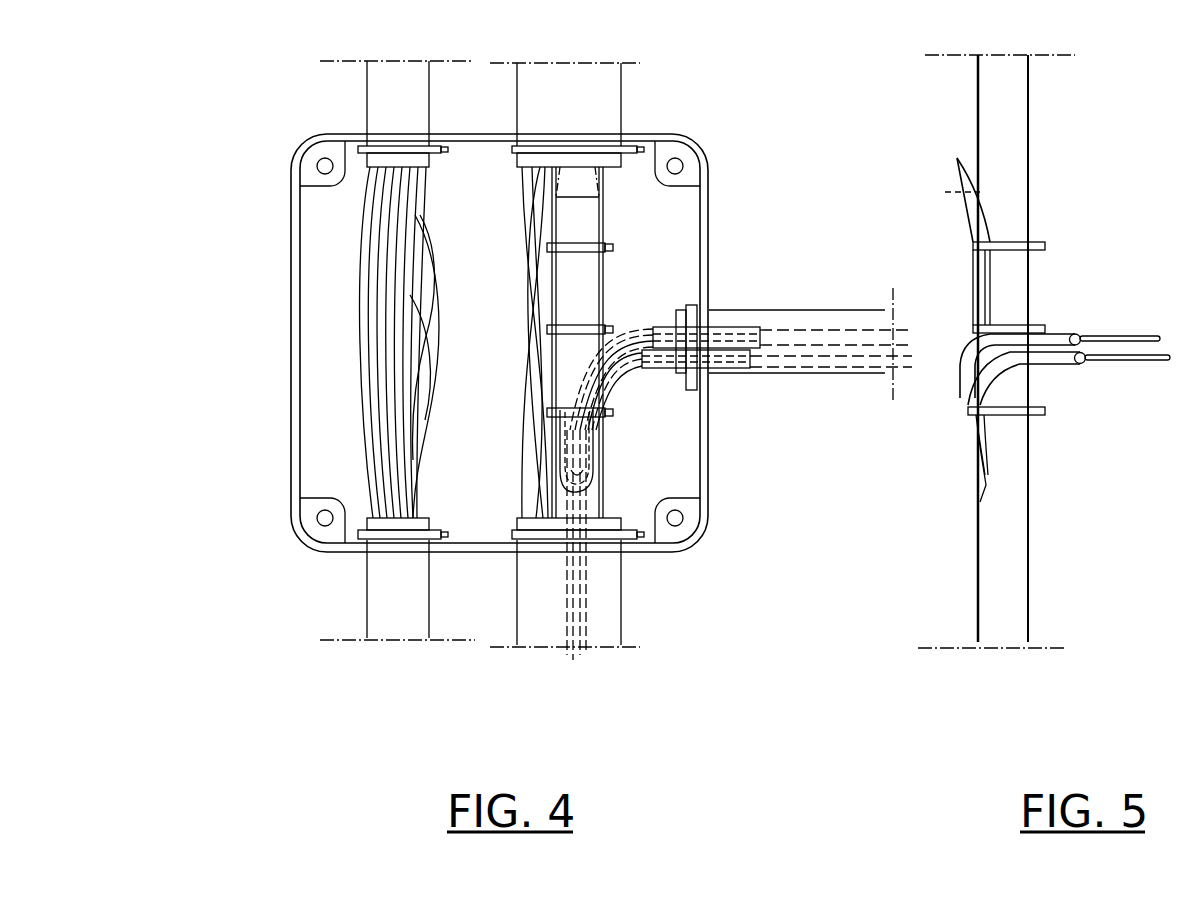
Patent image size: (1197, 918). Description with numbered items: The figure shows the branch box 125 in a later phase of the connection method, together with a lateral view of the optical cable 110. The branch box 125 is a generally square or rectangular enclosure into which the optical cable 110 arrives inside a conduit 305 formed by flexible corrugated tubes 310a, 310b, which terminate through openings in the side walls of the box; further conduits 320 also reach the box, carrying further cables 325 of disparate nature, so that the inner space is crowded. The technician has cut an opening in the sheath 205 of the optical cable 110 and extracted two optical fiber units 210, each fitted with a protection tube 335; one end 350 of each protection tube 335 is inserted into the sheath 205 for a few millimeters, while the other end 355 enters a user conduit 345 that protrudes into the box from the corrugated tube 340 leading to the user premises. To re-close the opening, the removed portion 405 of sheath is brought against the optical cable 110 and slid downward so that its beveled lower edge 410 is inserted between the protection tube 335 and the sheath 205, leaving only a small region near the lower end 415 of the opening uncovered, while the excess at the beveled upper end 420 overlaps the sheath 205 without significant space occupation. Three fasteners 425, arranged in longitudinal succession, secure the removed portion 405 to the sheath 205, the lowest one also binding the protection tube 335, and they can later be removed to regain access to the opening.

In FIG. 4, the optical cable 110 is at (548, 218).
In FIG. 5, the optical cable 110 is at (1030, 105).
In FIG. 4, the branch box 125 is at (290, 290).
In FIG. 4, the sheath 205 is at (603, 188).
In FIG. 4, the optical fiber units 210 is at (575, 337).
In FIG. 5, the optical fiber units 210 is at (1105, 335).
In FIG. 4, the conduit 305 is at (623, 592).
In FIG. 4, the corrugated tube 310a is at (621, 615).
In FIG. 4, the corrugated tube 310b is at (621, 103).
In FIG. 4, the further conduits 320 is at (367, 112).
In FIG. 4, the further cables 325 is at (365, 376).
In FIG. 4, the protection tube 335 is at (625, 325).
In FIG. 5, the protection tube 335 is at (1060, 330).
In FIG. 4, the conduit 340 is at (832, 310).
In FIG. 4, the user conduit 345 is at (733, 325).
In FIG. 4, the end of protection tube 350 is at (567, 573).
In FIG. 4, the other end of protection tube 355 is at (757, 322).
In FIG. 4, the removed portion of sheath 405 is at (567, 280).
In FIG. 5, the removed portion of sheath 405 is at (977, 303).
In FIG. 4, the lower edge 410 is at (560, 435).
In FIG. 5, the lower edge 410 is at (977, 450).
In FIG. 4, the lower end of opening 415 is at (590, 477).
In FIG. 5, the upper end 420 is at (968, 178).
In FIG. 4, the fasteners 425 is at (612, 243).
In FIG. 5, the fasteners 425 is at (1030, 242).